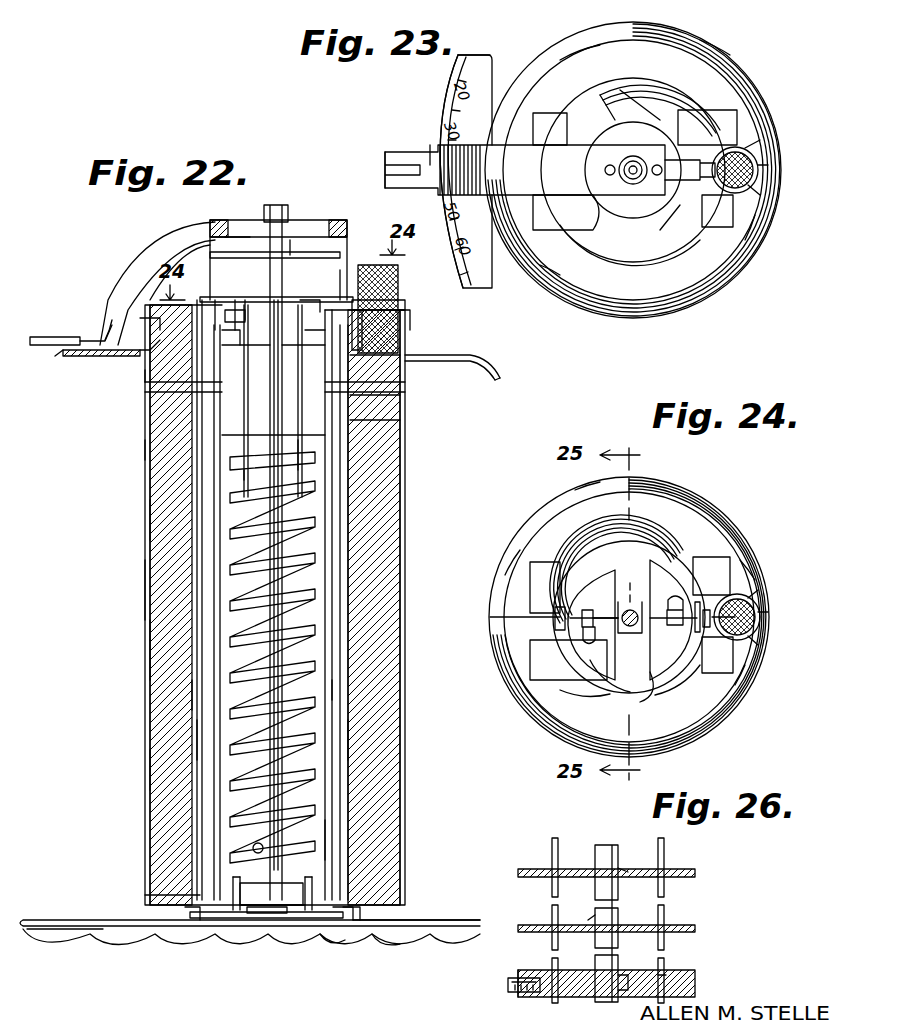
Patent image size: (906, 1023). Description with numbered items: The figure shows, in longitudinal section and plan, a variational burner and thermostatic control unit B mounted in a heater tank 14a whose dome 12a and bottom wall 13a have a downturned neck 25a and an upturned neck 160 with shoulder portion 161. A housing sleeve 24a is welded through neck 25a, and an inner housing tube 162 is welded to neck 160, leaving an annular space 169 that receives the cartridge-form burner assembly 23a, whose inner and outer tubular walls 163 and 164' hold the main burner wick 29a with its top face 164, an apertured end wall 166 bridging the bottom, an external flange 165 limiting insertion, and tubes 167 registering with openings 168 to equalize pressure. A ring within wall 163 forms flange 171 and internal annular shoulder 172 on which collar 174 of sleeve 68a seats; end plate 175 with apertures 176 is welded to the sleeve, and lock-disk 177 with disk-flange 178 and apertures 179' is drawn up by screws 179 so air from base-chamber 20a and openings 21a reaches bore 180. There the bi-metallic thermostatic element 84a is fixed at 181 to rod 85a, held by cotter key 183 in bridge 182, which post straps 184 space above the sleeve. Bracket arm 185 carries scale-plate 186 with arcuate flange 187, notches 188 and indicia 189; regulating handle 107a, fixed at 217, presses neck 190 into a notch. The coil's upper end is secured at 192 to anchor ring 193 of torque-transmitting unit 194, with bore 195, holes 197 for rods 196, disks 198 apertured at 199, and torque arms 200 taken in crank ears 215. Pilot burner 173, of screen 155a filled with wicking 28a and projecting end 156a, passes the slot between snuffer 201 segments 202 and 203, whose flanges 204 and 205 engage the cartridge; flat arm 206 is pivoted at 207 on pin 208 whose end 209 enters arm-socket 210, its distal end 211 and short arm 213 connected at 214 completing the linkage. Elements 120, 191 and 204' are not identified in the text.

In FIG. 22, the dome 12a is at (492, 382).
In FIG. 22, the bottom wall 13a is at (63, 918).
In FIG. 22, the tank 14a is at (105, 841).
In FIG. 22, the base-chamber 20a is at (438, 912).
In FIG. 22, the openings 21a is at (385, 945).
In FIG. 22, the burner assembly 23a is at (150, 628).
In FIG. 22, the housing sleeve 24a is at (145, 438).
In FIG. 22, the downturned neck 25a is at (145, 375).
In FIG. 22, the wicking 28a is at (400, 335).
In FIG. 23, the wicking 28a is at (760, 165).
In FIG. 24, the wicking 28a is at (760, 625).
In FIG. 22, the main burner wick 29a is at (160, 684).
In FIG. 23, the main burner wick 29a is at (755, 190).
In FIG. 24, the main burner wick 29a is at (758, 645).
In FIG. 22, the sleeve 68a is at (360, 740).
In FIG. 22, the thermostatic element 84a is at (230, 788).
In FIG. 26, the thermostatic element 84a is at (510, 992).
In FIG. 22, the rod 85a is at (285, 668).
In FIG. 23, the rod 85a is at (632, 185).
In FIG. 24, the rod 85a is at (637, 605).
In FIG. 26, the rod 85a is at (605, 845).
In FIG. 22, the regulating handle 107a is at (160, 255).
In FIG. 23, the regulating handle 107a is at (525, 170).
In FIG. 22, the cross pin 120 is at (260, 415).
In FIG. 22, the tubular wire screen 155a is at (420, 356).
In FIG. 23, the tubular wire screen 155a is at (768, 172).
In FIG. 24, the tubular wire screen 155a is at (768, 613).
In FIG. 22, the upper end of screen 156a is at (405, 300).
In FIG. 22, the upturned neck 160 is at (290, 910).
In FIG. 22, the shoulder portion 161 is at (355, 910).
In FIG. 22, the inner housing tube 162 is at (200, 755).
In FIG. 22, the inner tubular wall 163 is at (190, 650).
In FIG. 22, the top face of wicking 164 is at (275, 605).
In FIG. 22, the outer tubular wall 164' is at (122, 590).
In FIG. 22, the external flange 165 is at (140, 356).
In FIG. 22, the apertured end wall 166 is at (145, 900).
In FIG. 22, the tubes 167 is at (150, 400).
In FIG. 22, the openings 168 is at (150, 390).
In FIG. 22, the annular space 169 is at (200, 495).
In FIG. 22, the flange 171 is at (360, 400).
In FIG. 22, the internal annular shoulder 172 is at (360, 418).
In FIG. 22, the pilot burner 173 is at (400, 305).
In FIG. 23, the pilot burner 173 is at (755, 140).
In FIG. 24, the pilot burner 173 is at (760, 592).
In FIG. 22, the external collar 174 is at (350, 355).
In FIG. 22, the end plate 175 is at (335, 850).
In FIG. 22, the apertures 176 is at (308, 876).
In FIG. 22, the lock-disk 177 is at (300, 918).
In FIG. 22, the disk-flange 178 is at (335, 945).
In FIG. 22, the screws 179 is at (285, 908).
In FIG. 22, the apertures 179' is at (272, 938).
In FIG. 22, the bore 180 is at (197, 725).
In FIG. 22, the fixing point 181 is at (252, 846).
In FIG. 22, the bridge 182 is at (345, 265).
In FIG. 22, the cotter key 183 is at (262, 885).
In FIG. 22, the post straps 184 is at (215, 228).
In FIG. 24, the post straps 184 is at (700, 570).
In FIG. 22, the bracket arm 185 is at (160, 245).
In FIG. 23, the bracket arm 185 is at (680, 220).
In FIG. 22, the scale-plate 186 is at (95, 356).
In FIG. 23, the scale-plate 186 is at (495, 278).
In FIG. 22, the arcuate flange 187 is at (60, 352).
In FIG. 22, the notches 188 is at (100, 322).
In FIG. 23, the notches 188 is at (450, 90).
In FIG. 23, the temperature indicia 189 is at (470, 52).
In FIG. 22, the neck 190 is at (75, 338).
In FIG. 23, the neck 190 is at (425, 148).
In FIG. 22, the handle 191 is at (55, 320).
In FIG. 23, the handle 191 is at (405, 160).
In FIG. 22, the securing point 192 is at (243, 465).
In FIG. 26, the securing point 192 is at (518, 972).
In FIG. 22, the anchor ring 193 is at (316, 456).
In FIG. 26, the anchor ring 193 is at (695, 982).
In FIG. 22, the torque-transmitting unit 194 is at (214, 440).
In FIG. 26, the torque-transmitting unit 194 is at (686, 854).
In FIG. 26, the bore 195 is at (624, 972).
In FIG. 22, the rods 196 is at (200, 372).
In FIG. 26, the rods 196 is at (665, 897).
In FIG. 26, the holes 197 is at (666, 975).
In FIG. 22, the disks 198 is at (205, 457).
In FIG. 26, the disks 198 is at (700, 928).
In FIG. 26, the apertures 199 is at (594, 916).
In FIG. 22, the torque arms 200 is at (236, 350).
In FIG. 22, the snuffer 201 is at (305, 245).
In FIG. 23, the snuffer 201 is at (742, 44).
In FIG. 24, the snuffer 201 is at (503, 528).
In FIG. 22, the segment 202 is at (150, 272).
In FIG. 23, the segment 202 is at (585, 42).
In FIG. 24, the segment 202 is at (505, 550).
In FIG. 23, the segment 203 is at (640, 310).
In FIG. 24, the segment 203 is at (672, 740).
In FIG. 23, the external flange 204 is at (775, 227).
In FIG. 24, the external flange 204 is at (772, 562).
In FIG. 22, the rim 204' is at (428, 319).
In FIG. 23, the rim 204' is at (707, 31).
In FIG. 24, the rim 204' is at (568, 477).
In FIG. 22, the internal flange 205 is at (148, 322).
In FIG. 23, the internal flange 205 is at (595, 300).
In FIG. 24, the internal flange 205 is at (748, 690).
In FIG. 22, the flat arm 206 is at (300, 295).
In FIG. 23, the flat arm 206 is at (560, 232).
In FIG. 24, the flat arm 206 is at (645, 700).
In FIG. 22, the pivotal mounting 207 is at (310, 300).
In FIG. 24, the pivotal mounting 207 is at (685, 595).
In FIG. 22, the pivot pin 208 is at (240, 308).
In FIG. 24, the pivot pin 208 is at (705, 640).
In FIG. 24, the pin end 209 is at (630, 634).
In FIG. 22, the arm-socket 210 is at (255, 300).
In FIG. 24, the arm-socket 210 is at (606, 610).
In FIG. 23, the distal end of arm 211 is at (690, 240).
In FIG. 24, the distal end of arm 211 is at (672, 670).
In FIG. 22, the short arm 213 is at (200, 332).
In FIG. 24, the short arm 213 is at (745, 640).
In FIG. 22, the pivotal connection 214 is at (215, 282).
In FIG. 24, the pivotal connection 214 is at (735, 570).
In FIG. 22, the crank ear 215 is at (200, 352).
In FIG. 22, the adjustable fixing 217 is at (268, 228).
In FIG. 23, the adjustable fixing 217 is at (637, 155).
In FIG. 22, the thermostatic control unit B is at (335, 700).